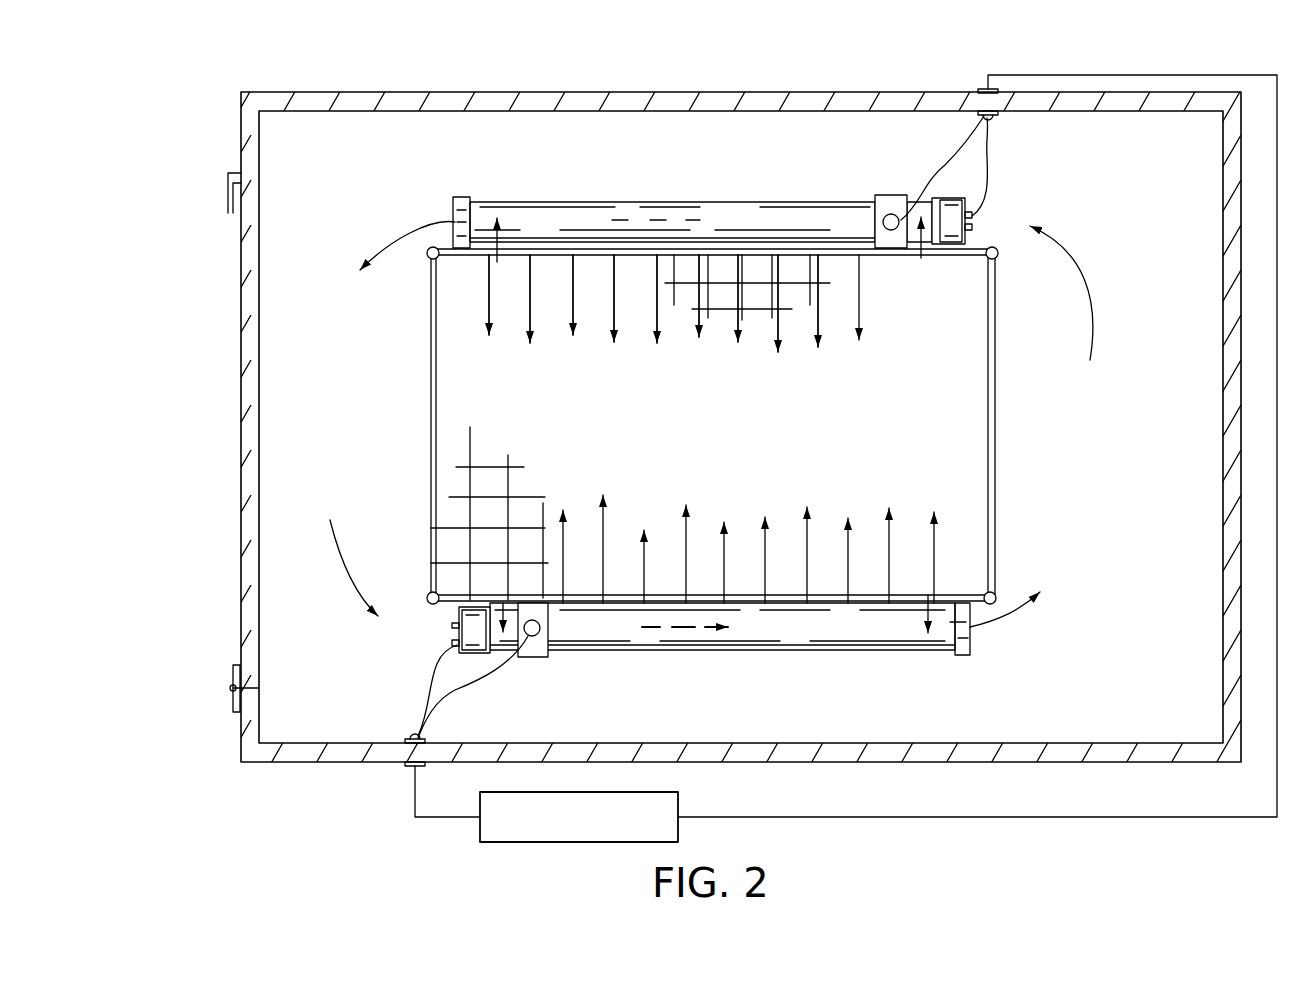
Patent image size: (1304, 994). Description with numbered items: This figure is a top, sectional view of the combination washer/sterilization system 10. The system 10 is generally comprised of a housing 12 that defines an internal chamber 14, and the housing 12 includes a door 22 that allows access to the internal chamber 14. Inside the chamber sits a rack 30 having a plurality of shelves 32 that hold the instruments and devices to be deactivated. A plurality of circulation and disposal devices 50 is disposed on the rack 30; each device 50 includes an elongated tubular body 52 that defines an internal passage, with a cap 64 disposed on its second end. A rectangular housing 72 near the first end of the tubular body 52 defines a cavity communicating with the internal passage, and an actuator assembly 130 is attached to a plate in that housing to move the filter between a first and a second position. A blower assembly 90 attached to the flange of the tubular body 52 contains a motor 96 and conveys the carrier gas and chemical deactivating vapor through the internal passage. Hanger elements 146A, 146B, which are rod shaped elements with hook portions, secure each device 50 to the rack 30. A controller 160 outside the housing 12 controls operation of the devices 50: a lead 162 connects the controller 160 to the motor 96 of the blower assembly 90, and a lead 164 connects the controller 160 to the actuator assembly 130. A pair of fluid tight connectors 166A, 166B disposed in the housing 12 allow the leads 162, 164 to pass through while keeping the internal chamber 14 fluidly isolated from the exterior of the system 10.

The combination washer/sterilization system 10 is at (203, 110).
The housing 12 is at (735, 101).
The internal chamber 14 is at (596, 131).
The door 22 is at (250, 405).
The rack 30 is at (1000, 440).
The shelves 32 is at (487, 465).
The circulation and disposal device 50 is at (706, 188).
The tubular body 52 is at (638, 200).
The cap 64 is at (455, 206).
The housing 72 is at (882, 195).
The blower assembly 90 is at (960, 248).
The motor 96 is at (975, 233).
The actuator assembly 130 is at (539, 622).
The hanger element 146A is at (914, 262).
The hanger element 146B is at (500, 231).
The controller 160 is at (480, 836).
The lead 162 is at (996, 170).
The lead 164 is at (950, 160).
The fluid tight connector 166A is at (405, 735).
The fluid tight connector 166B is at (1000, 119).